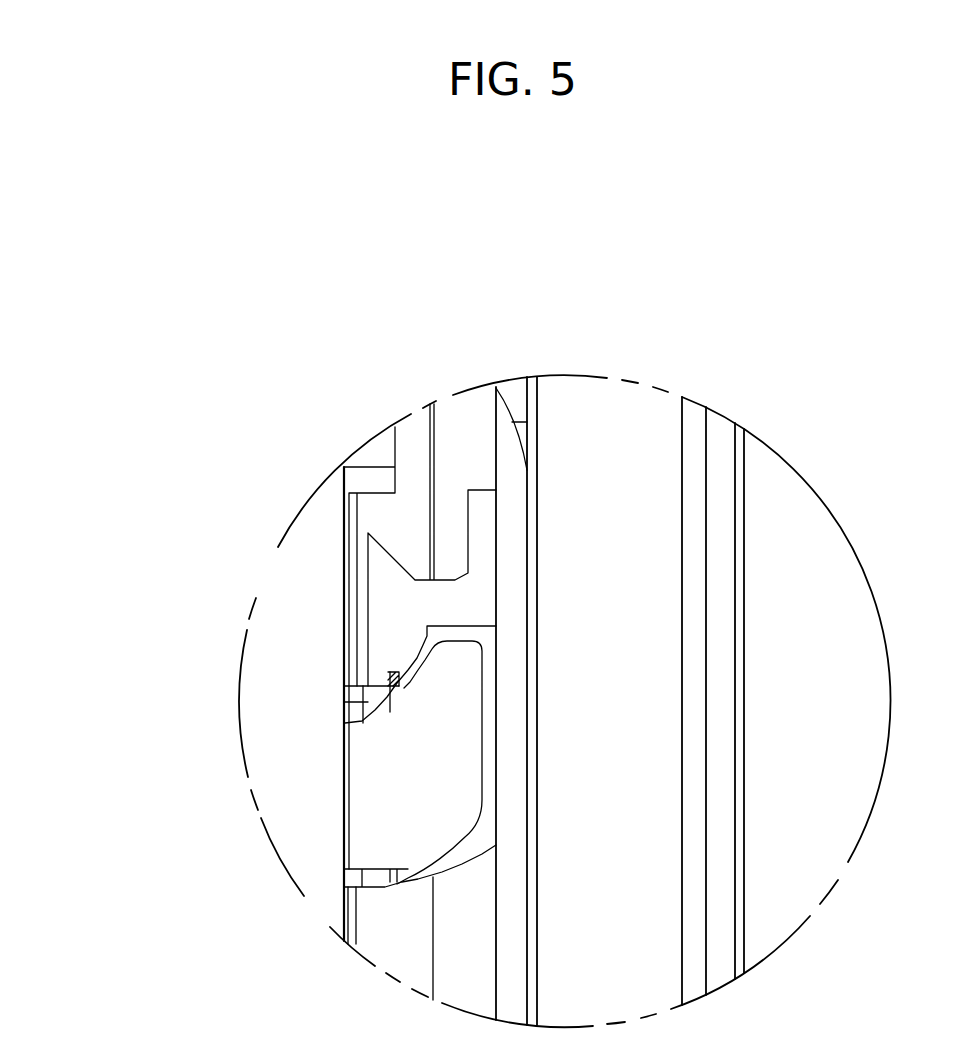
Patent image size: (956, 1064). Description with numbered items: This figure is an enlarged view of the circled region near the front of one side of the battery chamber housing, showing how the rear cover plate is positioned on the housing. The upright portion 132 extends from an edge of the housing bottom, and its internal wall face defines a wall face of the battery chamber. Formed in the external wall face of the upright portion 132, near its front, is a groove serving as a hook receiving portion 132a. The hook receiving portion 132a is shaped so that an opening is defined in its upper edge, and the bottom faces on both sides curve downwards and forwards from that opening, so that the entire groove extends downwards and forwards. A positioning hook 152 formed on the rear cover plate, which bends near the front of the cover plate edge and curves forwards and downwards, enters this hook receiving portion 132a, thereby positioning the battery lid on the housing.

The upright portion 132 is at (352, 553).
The hook receiving portion 132a is at (335, 698).
The positioning hook 152 is at (462, 700).